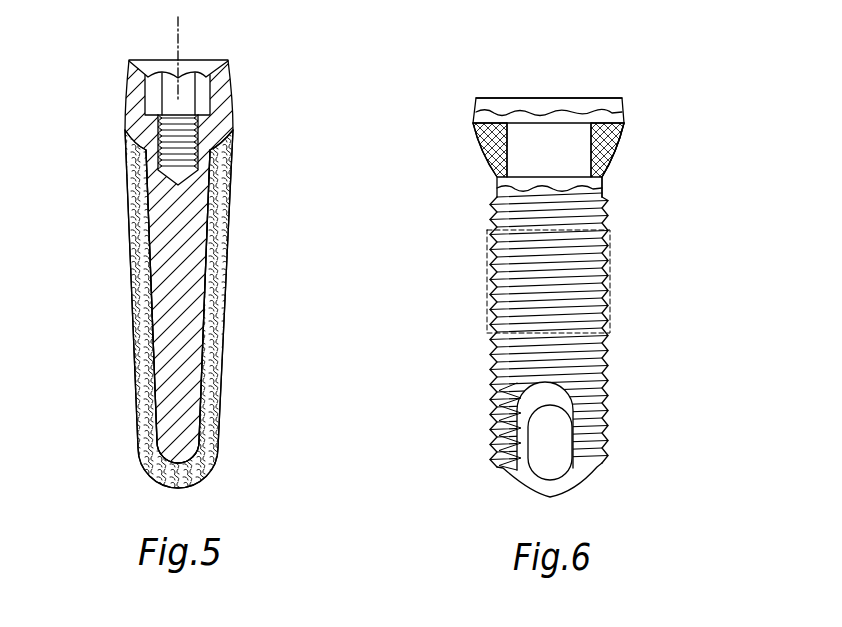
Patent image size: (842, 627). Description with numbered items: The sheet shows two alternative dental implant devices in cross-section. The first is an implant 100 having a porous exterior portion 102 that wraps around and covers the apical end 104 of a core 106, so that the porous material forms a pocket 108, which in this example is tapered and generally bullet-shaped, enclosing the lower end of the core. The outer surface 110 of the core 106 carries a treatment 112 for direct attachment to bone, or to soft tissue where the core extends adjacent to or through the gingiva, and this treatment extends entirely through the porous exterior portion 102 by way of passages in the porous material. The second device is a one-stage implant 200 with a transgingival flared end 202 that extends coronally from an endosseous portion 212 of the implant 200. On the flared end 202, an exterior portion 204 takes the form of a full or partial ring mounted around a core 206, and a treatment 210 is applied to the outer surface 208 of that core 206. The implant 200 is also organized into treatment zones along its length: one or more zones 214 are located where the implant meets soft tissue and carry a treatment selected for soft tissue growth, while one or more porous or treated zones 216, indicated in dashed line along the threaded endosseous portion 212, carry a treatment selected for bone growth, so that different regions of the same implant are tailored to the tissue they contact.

In FIG. 5, the implant 100 is at (280, 54).
In FIG. 5, the porous exterior portion 102 is at (135, 264).
In FIG. 5, the apical end 104 is at (180, 447).
In FIG. 5, the core 106 is at (192, 298).
In FIG. 5, the pocket 108 is at (214, 236).
In FIG. 5, the outer surface 110 is at (155, 366).
In FIG. 5, the treatment 112 is at (203, 339).
In FIG. 6, the implant 200 is at (667, 94).
In FIG. 6, the transgingival flared end 202 is at (525, 118).
In FIG. 6, the exterior portion 204 is at (495, 140).
In FIG. 6, the core 206 is at (525, 166).
In FIG. 6, the outer surface 208 is at (610, 132).
In FIG. 6, the treatment 210 is at (612, 152).
In FIG. 6, the endosseous portion 212 is at (609, 345).
In FIG. 6, the zone for soft tissue growth 214 is at (604, 174).
In FIG. 6, the porous or treated zone for bone growth 216 is at (610, 233).